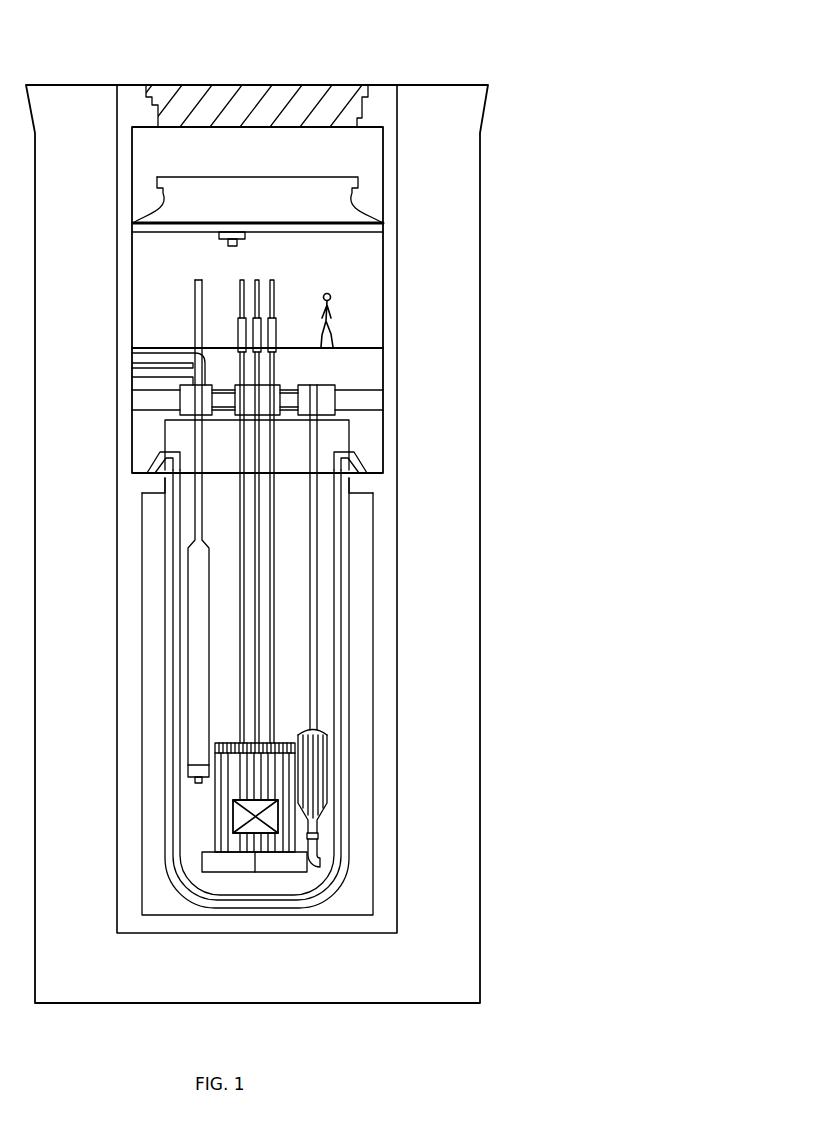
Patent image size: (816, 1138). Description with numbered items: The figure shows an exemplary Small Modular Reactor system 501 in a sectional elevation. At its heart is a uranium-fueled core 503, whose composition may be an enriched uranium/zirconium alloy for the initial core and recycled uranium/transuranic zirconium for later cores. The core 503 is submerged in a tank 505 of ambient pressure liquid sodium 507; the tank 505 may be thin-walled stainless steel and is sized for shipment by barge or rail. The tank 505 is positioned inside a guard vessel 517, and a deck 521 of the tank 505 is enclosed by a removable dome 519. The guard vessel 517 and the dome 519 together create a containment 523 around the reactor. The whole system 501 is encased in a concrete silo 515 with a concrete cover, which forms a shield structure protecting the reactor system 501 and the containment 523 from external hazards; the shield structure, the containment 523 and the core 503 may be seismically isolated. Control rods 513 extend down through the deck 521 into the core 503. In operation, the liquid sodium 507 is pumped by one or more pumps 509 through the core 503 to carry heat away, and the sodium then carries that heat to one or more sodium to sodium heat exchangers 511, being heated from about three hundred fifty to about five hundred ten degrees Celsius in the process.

The Small Modular Reactor system 501 is at (437, 68).
The uranium-fueled core 503 is at (233, 817).
The tank 505 is at (337, 587).
The liquid sodium 507 is at (295, 633).
The pump 509 is at (315, 768).
The sodium to sodium heat exchanger 511 is at (192, 605).
The control rods 513 is at (238, 290).
The concrete silo 515 is at (452, 433).
The guard vessel 517 is at (343, 552).
The removable dome 519 is at (372, 200).
The deck 521 is at (363, 347).
The containment 523 is at (386, 258).